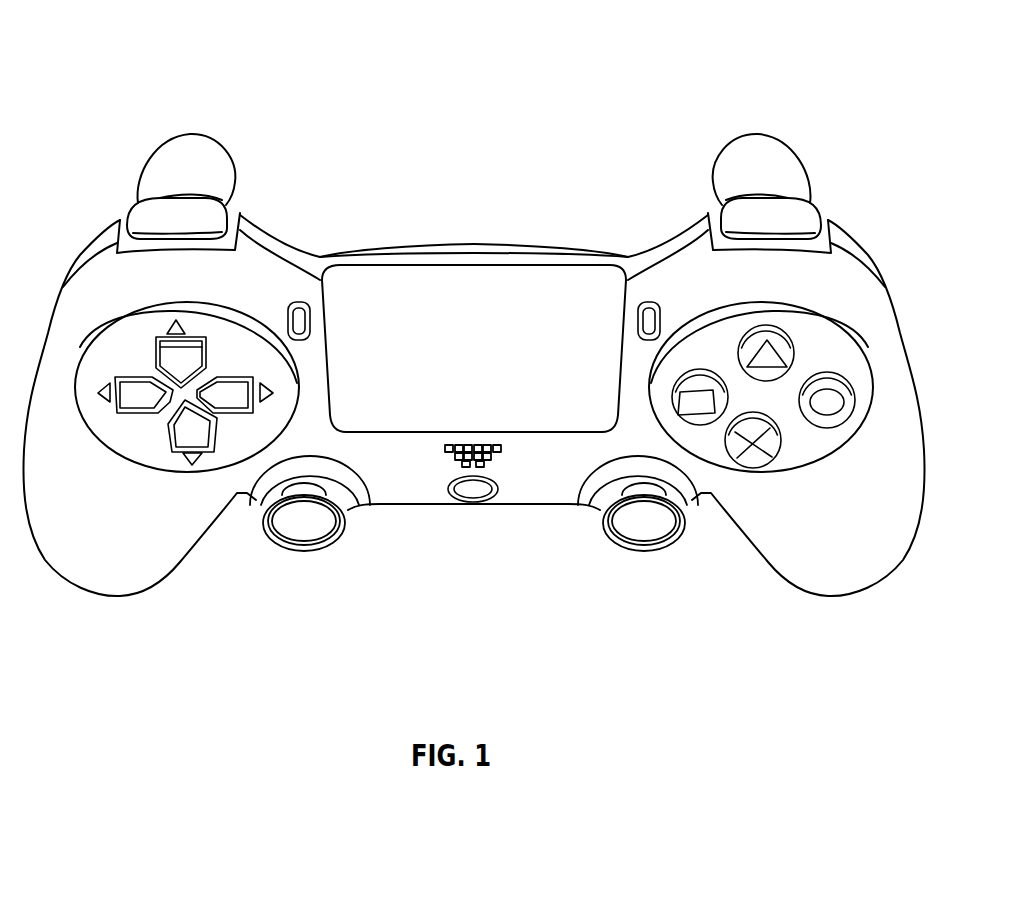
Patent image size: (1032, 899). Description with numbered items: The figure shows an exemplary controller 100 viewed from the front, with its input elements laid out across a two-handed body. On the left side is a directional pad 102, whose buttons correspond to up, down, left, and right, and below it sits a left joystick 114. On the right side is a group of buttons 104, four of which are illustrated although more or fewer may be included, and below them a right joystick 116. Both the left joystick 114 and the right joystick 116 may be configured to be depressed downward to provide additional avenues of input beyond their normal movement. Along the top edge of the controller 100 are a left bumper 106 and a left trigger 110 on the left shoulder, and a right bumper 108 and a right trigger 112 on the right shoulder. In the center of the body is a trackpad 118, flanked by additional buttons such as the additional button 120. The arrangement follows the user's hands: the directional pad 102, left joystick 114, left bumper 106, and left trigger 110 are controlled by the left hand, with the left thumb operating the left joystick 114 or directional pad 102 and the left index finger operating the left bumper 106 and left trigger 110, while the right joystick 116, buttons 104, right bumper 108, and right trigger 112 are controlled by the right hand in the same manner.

The controller 100 is at (819, 58).
The directional pad 102 is at (191, 455).
The buttons 104 is at (753, 461).
The left bumper 106 is at (130, 210).
The right bumper 108 is at (812, 207).
The left trigger 110 is at (165, 163).
The right trigger 112 is at (777, 163).
The left joystick 114 is at (320, 530).
The right joystick 116 is at (630, 530).
The trackpad 118 is at (447, 310).
The additional button 120 is at (645, 302).